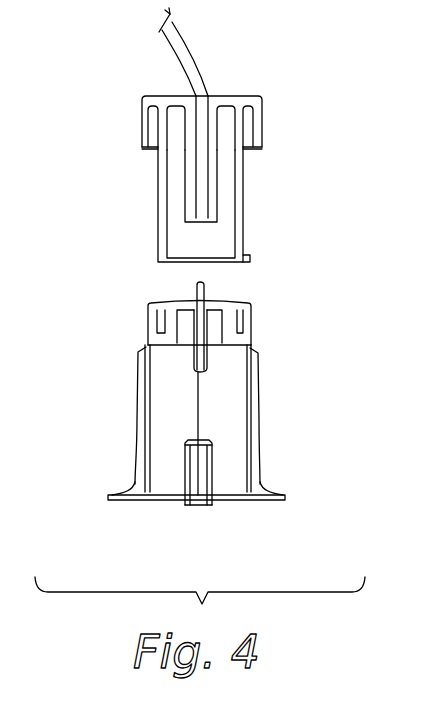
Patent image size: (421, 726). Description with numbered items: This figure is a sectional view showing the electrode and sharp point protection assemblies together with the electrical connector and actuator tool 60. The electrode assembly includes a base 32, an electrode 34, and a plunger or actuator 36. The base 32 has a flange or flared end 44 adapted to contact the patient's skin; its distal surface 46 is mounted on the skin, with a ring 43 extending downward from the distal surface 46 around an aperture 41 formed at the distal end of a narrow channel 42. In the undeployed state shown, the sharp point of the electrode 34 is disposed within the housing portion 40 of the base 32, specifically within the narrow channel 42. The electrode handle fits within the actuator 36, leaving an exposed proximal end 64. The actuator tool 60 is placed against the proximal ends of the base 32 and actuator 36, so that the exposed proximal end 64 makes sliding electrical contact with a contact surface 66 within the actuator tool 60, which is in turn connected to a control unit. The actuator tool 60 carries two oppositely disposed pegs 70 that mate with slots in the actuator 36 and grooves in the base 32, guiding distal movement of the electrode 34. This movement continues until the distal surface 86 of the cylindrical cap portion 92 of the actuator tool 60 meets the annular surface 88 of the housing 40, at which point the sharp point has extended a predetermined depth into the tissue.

The cylindrical cap portion 92 is at (262, 112).
The distal surface 86 is at (258, 148).
The electrical connector and actuator tool 60 is at (158, 170).
The contact surface 66 is at (196, 213).
The pegs 70 is at (250, 258).
The plunger or actuator 36 is at (170, 303).
The exposed proximal end 64 is at (206, 288).
The housing portion 40 is at (172, 385).
The base 32 is at (138, 437).
The annular surface 88 is at (258, 353).
The electrode 34 is at (198, 412).
The narrow channel 42 is at (205, 478).
The flange or flared end 44 is at (112, 494).
The distal surface 46 is at (272, 501).
The ring 43 is at (185, 503).
The aperture 41 is at (205, 505).